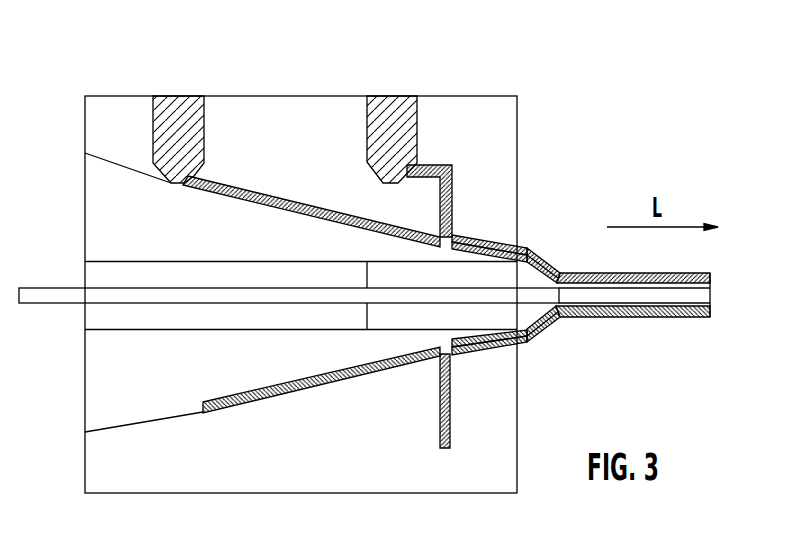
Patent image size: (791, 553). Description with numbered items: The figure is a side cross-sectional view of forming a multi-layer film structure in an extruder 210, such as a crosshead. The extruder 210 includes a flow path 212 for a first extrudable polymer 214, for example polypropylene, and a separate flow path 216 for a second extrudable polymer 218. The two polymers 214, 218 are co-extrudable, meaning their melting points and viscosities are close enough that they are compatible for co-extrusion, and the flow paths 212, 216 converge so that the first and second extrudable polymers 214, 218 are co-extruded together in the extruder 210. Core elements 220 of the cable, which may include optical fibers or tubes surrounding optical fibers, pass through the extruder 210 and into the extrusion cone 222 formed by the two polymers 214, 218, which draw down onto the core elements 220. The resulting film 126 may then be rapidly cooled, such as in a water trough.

The extruder 210 is at (553, 131).
The flow path 212 is at (452, 185).
The first extrudable polymer 214 is at (388, 117).
The flow path 216 is at (252, 192).
The second extrudable polymer 218 is at (177, 105).
The core elements 220 is at (50, 287).
The extrusion cone 222 is at (536, 256).
The film 126 is at (588, 316).